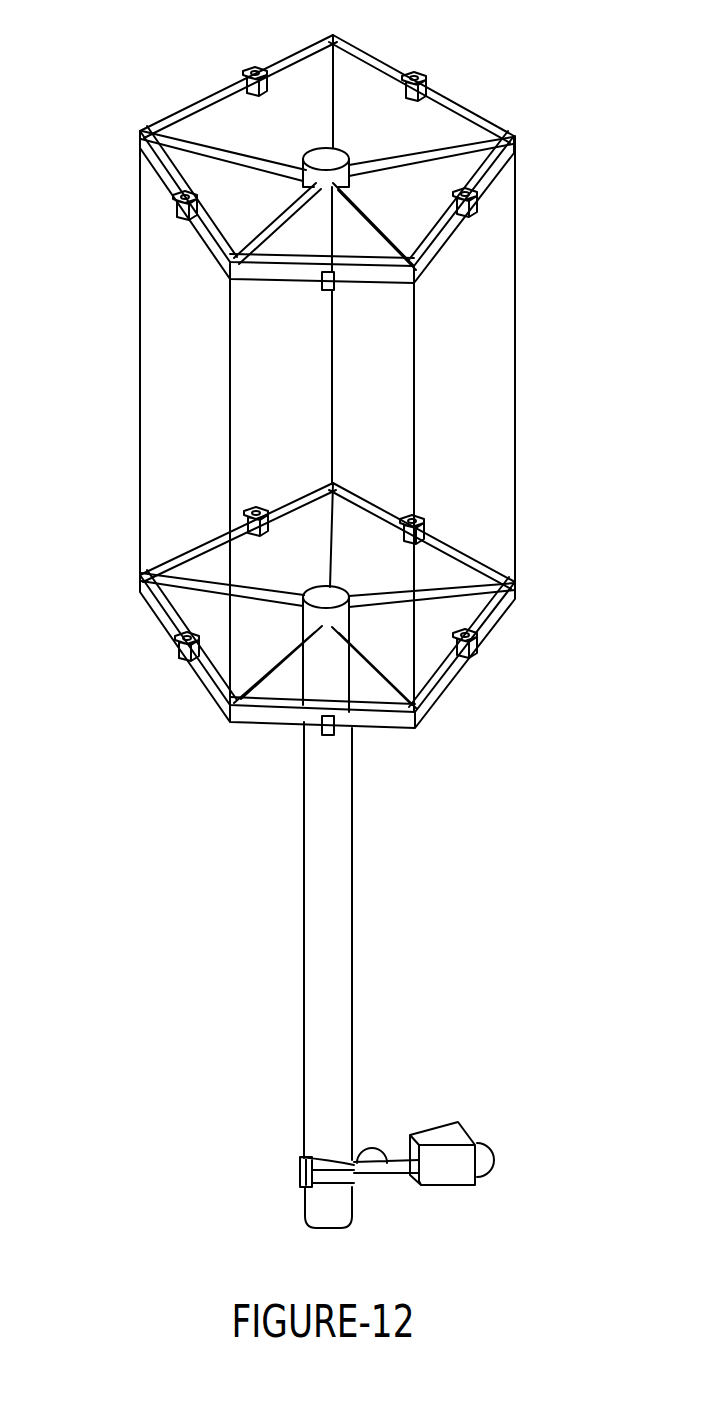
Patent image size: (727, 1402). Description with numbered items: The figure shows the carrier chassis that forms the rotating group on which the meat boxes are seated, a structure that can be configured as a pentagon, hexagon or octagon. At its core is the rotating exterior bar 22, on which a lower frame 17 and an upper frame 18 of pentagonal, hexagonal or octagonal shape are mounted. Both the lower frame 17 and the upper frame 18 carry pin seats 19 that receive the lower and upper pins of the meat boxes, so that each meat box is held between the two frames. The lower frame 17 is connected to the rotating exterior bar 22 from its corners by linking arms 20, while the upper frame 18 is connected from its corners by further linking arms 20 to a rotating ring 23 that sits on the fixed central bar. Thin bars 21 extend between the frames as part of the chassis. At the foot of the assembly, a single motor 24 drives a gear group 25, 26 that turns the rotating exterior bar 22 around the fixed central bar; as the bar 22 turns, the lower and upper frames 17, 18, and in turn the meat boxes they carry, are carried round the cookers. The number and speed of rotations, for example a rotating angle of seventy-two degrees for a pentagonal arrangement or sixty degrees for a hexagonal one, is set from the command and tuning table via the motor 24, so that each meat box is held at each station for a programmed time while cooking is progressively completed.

The lower frame 17 is at (488, 623).
The upper frame 18 is at (420, 92).
The seat 19 is at (256, 66).
The linking arms 20 is at (455, 148).
The thin bar 21 is at (140, 328).
The rotating exterior bar 22 is at (330, 878).
The rotating ring 23 is at (303, 163).
The motor 24 is at (450, 1162).
The gear group 25 is at (400, 1158).
The gear group 26 is at (341, 1162).